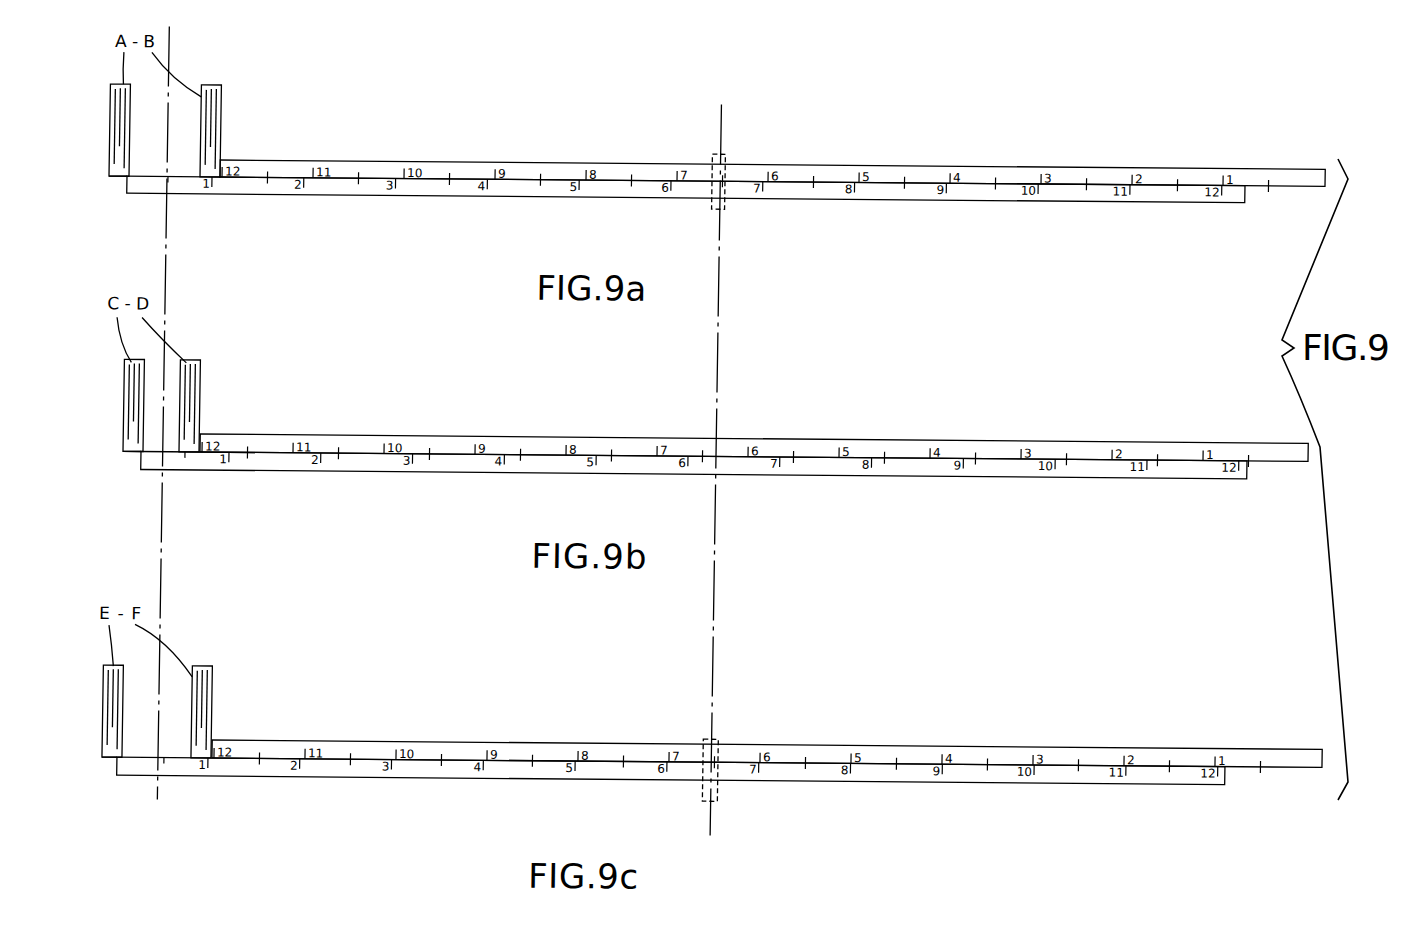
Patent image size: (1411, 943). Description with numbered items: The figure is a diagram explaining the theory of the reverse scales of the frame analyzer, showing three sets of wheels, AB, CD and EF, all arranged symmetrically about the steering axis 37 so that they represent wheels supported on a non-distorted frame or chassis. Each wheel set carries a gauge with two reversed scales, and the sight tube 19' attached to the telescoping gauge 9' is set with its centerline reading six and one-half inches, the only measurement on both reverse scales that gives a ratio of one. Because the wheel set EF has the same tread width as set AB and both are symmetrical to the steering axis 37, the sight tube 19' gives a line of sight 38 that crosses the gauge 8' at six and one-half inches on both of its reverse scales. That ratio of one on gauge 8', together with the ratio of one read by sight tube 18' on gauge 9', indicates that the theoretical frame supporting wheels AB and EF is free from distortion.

In FIG. 9a, the steering axis 37 is at (170, 35).
In FIG. 9b, the line of sight 38 is at (719, 340).
In FIG. 9a, the telescoping gauge 9' is at (773, 131).
In FIG. 9c, the gauge 8' is at (767, 723).
In FIG. 9a, the sight tube 19' is at (677, 154).
In FIG. 9c, the sight tube 18' is at (665, 792).